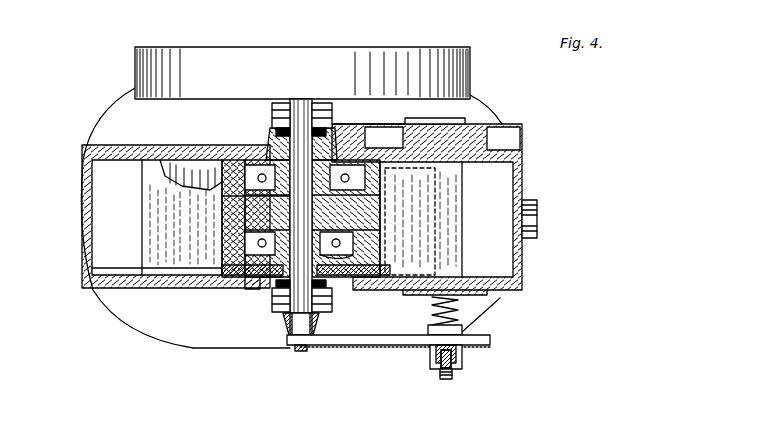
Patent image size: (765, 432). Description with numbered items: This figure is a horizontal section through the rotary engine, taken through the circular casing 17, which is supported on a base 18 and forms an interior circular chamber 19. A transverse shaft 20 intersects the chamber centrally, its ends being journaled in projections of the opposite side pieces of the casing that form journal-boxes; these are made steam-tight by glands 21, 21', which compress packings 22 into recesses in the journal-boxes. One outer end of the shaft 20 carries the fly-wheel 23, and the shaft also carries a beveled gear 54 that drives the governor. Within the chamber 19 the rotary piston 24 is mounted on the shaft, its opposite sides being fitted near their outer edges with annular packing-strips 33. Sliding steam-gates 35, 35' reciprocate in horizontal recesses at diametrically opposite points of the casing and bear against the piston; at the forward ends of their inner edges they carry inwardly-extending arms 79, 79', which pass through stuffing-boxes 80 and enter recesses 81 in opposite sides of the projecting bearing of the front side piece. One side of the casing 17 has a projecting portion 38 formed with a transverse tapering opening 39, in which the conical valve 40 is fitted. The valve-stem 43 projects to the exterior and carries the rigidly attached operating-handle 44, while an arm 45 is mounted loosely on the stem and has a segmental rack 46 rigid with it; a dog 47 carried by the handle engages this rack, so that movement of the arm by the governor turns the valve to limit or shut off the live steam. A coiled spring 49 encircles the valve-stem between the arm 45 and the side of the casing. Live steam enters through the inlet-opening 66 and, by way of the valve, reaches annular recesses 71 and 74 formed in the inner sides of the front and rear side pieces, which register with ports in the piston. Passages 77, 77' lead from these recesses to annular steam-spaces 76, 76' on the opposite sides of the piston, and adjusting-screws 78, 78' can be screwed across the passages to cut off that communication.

The circular casing 17 is at (522, 150).
The base 18 is at (128, 97).
The circular chamber 19 is at (190, 147).
The transverse shaft 20 is at (296, 108).
The gland 21 is at (281, 312).
The gland 21' is at (323, 115).
The packings 22 is at (252, 125).
The fly-wheel 23 is at (360, 58).
The rotary piston 24 is at (175, 209).
The annular packing-strips 33 is at (222, 158).
The sliding steam-gate 35 is at (157, 217).
The sliding steam-gate 35' is at (444, 219).
The projecting portion 38 is at (517, 296).
The tapering opening 39 is at (510, 124).
The conical valve 40 is at (465, 118).
The valve-stem 43 is at (454, 380).
The operating-handle 44 is at (470, 362).
The arm 45 is at (380, 346).
The segmental rack 46 is at (492, 350).
The dog 47 is at (433, 375).
The coiled spring 49 is at (430, 310).
The beveled gear 54 is at (296, 325).
The inlet-opening 66 is at (539, 220).
The annular recess 71 is at (258, 285).
The annular recess 74 is at (342, 150).
The annular steam-space 76 is at (232, 216).
The annular steam-space 76' is at (195, 185).
The passage 77 is at (371, 202).
The passage 77' is at (254, 150).
The adjusting-screw 78 is at (367, 246).
The adjusting-screw 78' is at (234, 143).
The inwardly-extending arm 79 is at (224, 295).
The inwardly-extending arm 79' is at (353, 297).
The stuffing-box 80 is at (235, 285).
The recess 81 is at (245, 300).